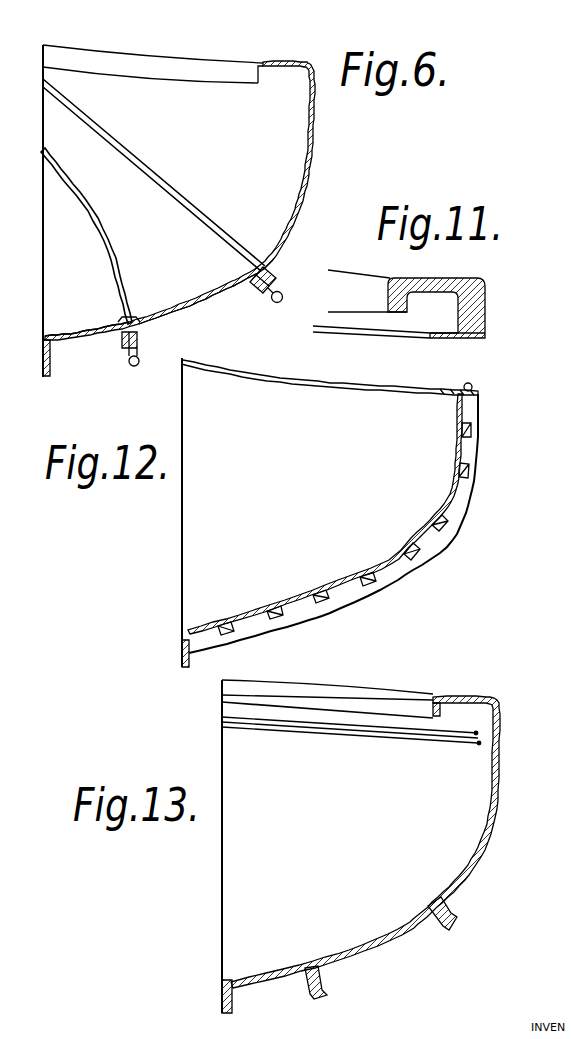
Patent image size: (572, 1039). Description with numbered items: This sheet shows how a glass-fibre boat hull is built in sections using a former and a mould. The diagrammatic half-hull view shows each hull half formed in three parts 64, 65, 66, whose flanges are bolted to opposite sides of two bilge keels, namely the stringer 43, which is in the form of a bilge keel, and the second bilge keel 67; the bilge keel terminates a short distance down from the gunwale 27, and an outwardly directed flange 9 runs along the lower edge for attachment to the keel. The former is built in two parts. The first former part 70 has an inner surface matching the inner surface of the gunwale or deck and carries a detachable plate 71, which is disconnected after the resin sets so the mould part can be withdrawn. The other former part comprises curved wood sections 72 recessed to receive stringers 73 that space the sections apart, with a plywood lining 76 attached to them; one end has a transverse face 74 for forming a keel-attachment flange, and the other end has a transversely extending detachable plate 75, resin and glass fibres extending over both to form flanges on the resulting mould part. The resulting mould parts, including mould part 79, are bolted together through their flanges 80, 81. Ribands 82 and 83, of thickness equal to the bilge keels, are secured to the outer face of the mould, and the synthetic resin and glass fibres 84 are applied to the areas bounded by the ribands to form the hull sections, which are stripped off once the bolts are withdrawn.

In FIG. 6, the outwardly directed flange 9 is at (50, 366).
In FIG. 6, the gunwale 27 is at (280, 68).
In FIG. 6, the stringer 43 is at (141, 328).
In FIG. 6, the hull part 64 is at (70, 337).
In FIG. 6, the hull part 65 is at (223, 282).
In FIG. 6, the hull part 66 is at (313, 180).
In FIG. 6, the bilge keel 67 is at (267, 272).
In FIG. 11, the former part 70 is at (485, 283).
In FIG. 11, the detachable plate 71 is at (447, 339).
In FIG. 12, the curved wood sections 72 is at (476, 477).
In FIG. 12, the stringers 73 is at (452, 492).
In FIG. 12, the transverse face 74 is at (182, 650).
In FIG. 11, the detachable plate 75 is at (371, 332).
In FIG. 12, the detachable plate 75 is at (440, 390).
In FIG. 12, the plywood lining 76 is at (445, 498).
In FIG. 13, the mould part 79 is at (463, 706).
In FIG. 13, the flange 80 is at (477, 746).
In FIG. 13, the flange 81 is at (476, 733).
In FIG. 13, the riband 82 is at (455, 913).
In FIG. 13, the riband 83 is at (335, 977).
In FIG. 12, the synthetic resin and glass fibres 84 is at (188, 403).
In FIG. 13, the synthetic resin and glass fibres 84 is at (497, 800).